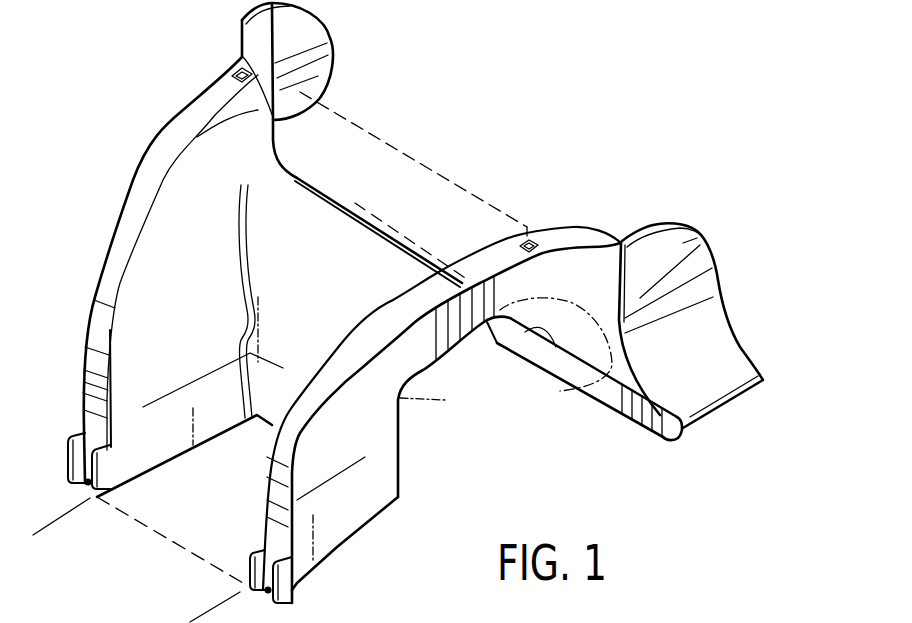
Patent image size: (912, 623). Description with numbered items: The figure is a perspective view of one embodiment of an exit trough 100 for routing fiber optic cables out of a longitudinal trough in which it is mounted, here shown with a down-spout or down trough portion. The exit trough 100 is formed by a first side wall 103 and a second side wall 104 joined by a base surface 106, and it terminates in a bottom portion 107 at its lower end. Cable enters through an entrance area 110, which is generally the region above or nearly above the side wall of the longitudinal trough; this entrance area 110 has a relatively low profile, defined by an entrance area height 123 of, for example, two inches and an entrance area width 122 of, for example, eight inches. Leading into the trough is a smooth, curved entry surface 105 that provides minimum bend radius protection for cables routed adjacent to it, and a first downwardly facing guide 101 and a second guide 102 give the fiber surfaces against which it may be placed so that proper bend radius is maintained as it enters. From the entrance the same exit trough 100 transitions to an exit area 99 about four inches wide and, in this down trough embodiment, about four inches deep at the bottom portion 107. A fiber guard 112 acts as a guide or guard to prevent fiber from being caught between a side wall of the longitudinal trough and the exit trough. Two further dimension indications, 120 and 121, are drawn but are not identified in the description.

The exit area 99 is at (217, 562).
The exit trough 100 is at (432, 108).
The first downwardly facing guide 101 is at (697, 335).
The second guide 102 is at (297, 30).
The first side wall 103 is at (400, 363).
The second side wall 104 is at (160, 263).
The entry surface 105 is at (230, 78).
The base surface 106 is at (339, 298).
The bottom portion 107 is at (172, 470).
The entrance area 110 is at (367, 130).
The fiber guard 112 is at (573, 382).
The width dimension 120 is at (190, 620).
The depth dimension 121 is at (263, 428).
The entrance area width 122 is at (517, 270).
The entrance area height 123 is at (438, 253).